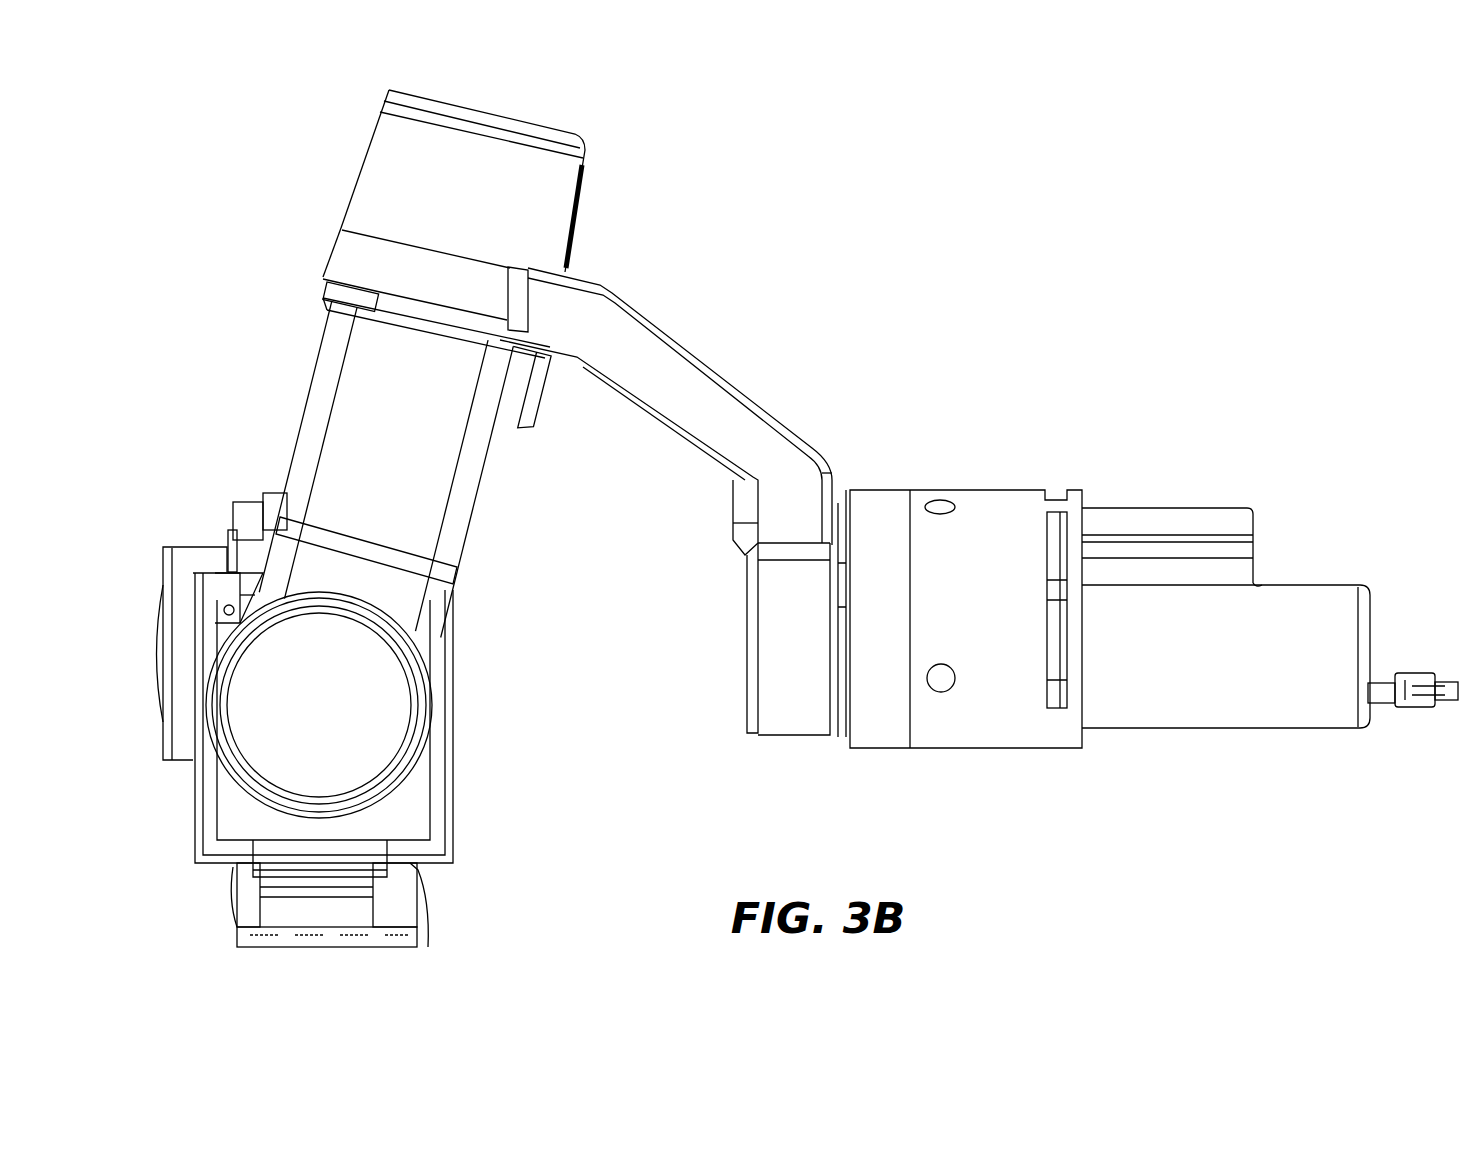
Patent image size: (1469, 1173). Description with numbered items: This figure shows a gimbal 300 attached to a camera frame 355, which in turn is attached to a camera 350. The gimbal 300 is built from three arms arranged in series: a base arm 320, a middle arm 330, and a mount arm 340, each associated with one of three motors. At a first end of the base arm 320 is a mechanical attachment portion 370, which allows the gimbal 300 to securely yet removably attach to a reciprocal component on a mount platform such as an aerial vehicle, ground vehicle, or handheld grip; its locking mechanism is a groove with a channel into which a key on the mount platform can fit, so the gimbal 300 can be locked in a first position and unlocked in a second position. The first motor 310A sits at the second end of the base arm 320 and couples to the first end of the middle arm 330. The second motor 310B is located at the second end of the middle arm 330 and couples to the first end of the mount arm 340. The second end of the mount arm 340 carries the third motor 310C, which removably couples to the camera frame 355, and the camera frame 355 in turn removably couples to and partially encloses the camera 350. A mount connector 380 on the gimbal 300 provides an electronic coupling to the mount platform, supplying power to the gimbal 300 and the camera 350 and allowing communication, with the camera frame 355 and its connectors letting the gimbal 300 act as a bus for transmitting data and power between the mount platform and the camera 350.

The gimbal 300 is at (889, 389).
The first motor 310A is at (947, 619).
The second motor 310B is at (454, 205).
The third motor 310C is at (319, 705).
The base arm 320 is at (966, 664).
The middle arm 330 is at (713, 403).
The mount arm 340 is at (385, 452).
The camera 350 is at (180, 563).
The camera frame 355 is at (423, 915).
The mechanical attachment portion 370 is at (1055, 487).
The mount connector 380 is at (1413, 713).